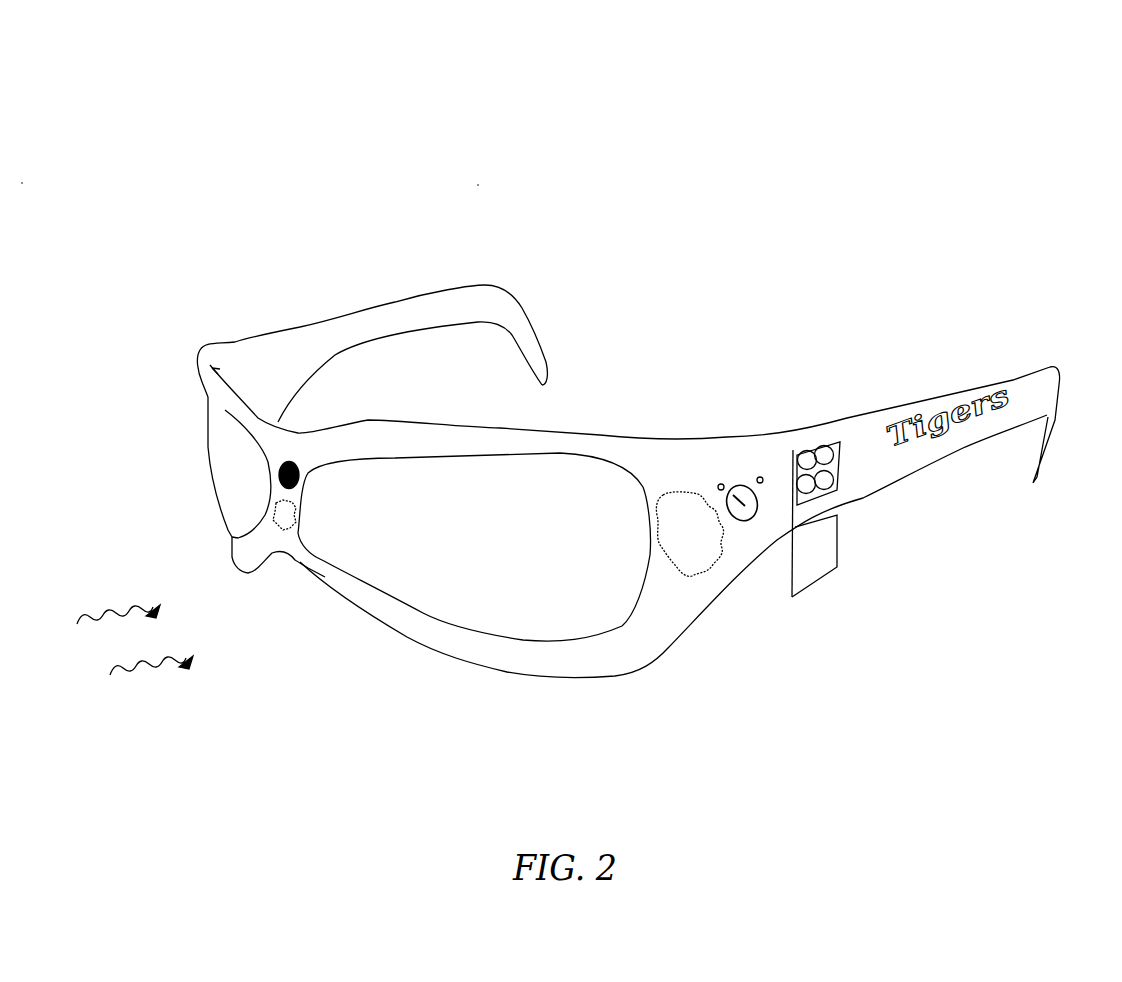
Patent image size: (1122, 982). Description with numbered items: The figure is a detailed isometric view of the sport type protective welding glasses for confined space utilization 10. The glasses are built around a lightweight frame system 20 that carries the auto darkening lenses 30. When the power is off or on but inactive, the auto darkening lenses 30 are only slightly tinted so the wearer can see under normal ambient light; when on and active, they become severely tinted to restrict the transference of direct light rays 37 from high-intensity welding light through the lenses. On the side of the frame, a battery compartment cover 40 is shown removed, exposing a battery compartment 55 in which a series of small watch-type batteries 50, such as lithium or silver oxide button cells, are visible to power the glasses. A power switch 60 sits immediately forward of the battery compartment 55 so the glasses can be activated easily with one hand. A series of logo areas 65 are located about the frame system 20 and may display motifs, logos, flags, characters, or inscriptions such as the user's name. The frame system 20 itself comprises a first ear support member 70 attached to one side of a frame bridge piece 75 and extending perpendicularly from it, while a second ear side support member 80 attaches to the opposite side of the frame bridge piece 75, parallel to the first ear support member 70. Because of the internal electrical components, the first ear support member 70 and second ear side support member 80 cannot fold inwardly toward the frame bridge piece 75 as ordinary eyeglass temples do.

The sport type protective welding glasses for confined space utilization 10 is at (1018, 175).
The frame system 20 is at (532, 655).
The auto darkening lenses 30 is at (235, 467).
The direct light rays 37 is at (80, 622).
The battery compartment cover 40 is at (813, 542).
The batteries 50 is at (807, 460).
The battery compartment 55 is at (837, 467).
The power switch 60 is at (747, 540).
The logo areas 65 is at (287, 517).
The first ear support member 70 is at (1048, 443).
The frame bridge piece 75 is at (299, 468).
The second ear side support member 80 is at (532, 337).